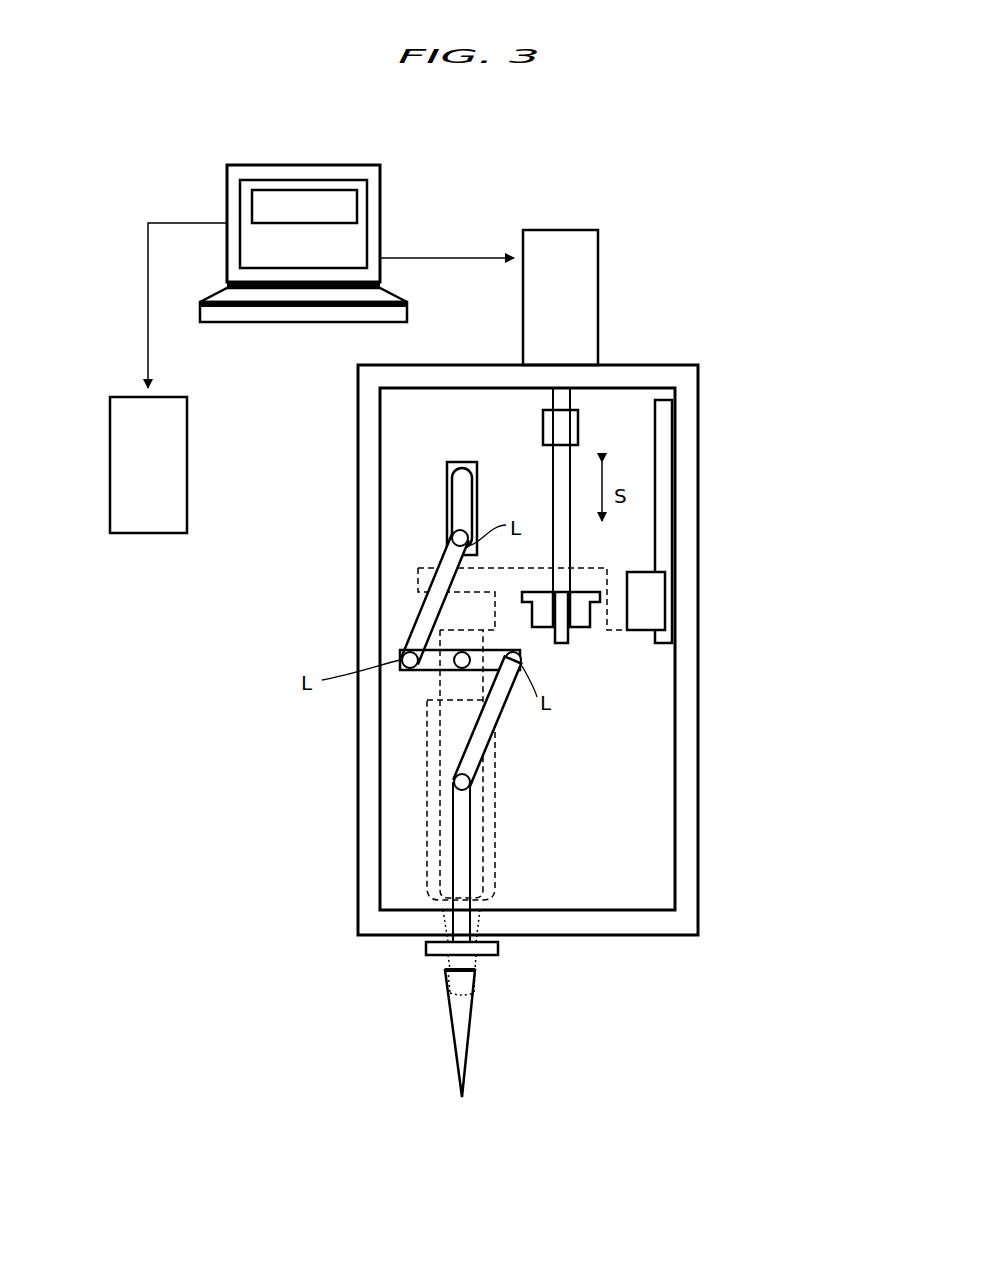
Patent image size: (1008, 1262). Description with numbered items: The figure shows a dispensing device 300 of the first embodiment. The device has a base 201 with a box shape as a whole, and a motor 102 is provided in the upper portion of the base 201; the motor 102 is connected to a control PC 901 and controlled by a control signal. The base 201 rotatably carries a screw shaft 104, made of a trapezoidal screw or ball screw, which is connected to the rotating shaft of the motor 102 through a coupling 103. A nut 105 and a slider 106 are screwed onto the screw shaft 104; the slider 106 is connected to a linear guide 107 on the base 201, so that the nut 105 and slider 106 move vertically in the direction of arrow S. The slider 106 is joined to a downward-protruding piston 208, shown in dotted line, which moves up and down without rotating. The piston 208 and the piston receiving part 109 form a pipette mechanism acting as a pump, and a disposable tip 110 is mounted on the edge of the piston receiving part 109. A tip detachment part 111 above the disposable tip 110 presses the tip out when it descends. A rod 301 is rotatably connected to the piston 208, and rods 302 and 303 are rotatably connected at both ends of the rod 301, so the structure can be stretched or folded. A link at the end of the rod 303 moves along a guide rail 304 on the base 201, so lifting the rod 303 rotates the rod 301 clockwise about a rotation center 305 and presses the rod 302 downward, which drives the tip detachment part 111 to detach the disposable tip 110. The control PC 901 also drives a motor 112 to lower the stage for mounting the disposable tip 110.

The dispensing device 300 is at (740, 228).
The control PC 901 is at (281, 313).
The motor 112 is at (167, 456).
The motor 102 is at (582, 290).
The base 201 is at (688, 418).
The coupling 103 is at (545, 430).
The linear guide 107 is at (668, 522).
The slider 106 is at (647, 605).
The nut 105 is at (582, 618).
The screw shaft 104 is at (561, 643).
The piston 208 is at (440, 610).
The piston receiving part 109 is at (427, 868).
The guide rail 304 is at (458, 487).
The rod 303 is at (417, 645).
The rod 301 is at (430, 668).
The rotation center 305 is at (460, 671).
The rod 302 is at (500, 693).
The disposable tip 110 is at (450, 1015).
The tip detachment part 111 is at (499, 948).